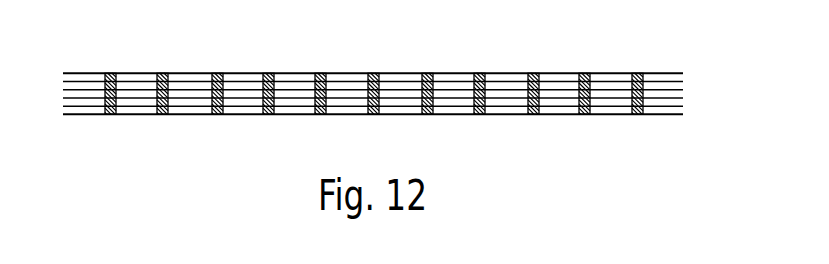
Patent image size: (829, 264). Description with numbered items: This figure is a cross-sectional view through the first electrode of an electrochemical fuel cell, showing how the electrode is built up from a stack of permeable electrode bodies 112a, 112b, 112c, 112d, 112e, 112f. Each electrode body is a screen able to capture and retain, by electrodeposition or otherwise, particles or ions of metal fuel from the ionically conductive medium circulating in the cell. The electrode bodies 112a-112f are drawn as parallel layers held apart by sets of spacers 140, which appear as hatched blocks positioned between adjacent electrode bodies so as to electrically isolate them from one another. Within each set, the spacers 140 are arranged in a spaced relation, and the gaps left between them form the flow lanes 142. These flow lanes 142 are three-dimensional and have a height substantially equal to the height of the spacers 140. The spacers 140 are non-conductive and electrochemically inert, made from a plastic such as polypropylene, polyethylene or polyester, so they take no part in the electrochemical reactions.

The permeable electrode body 112a is at (683, 117).
The permeable electrode body 112b is at (683, 108).
The permeable electrode body 112c is at (683, 99).
The permeable electrode body 112d is at (683, 90).
The permeable electrode body 112e is at (683, 80).
The permeable electrode body 112f is at (682, 73).
The spacer 140 is at (110, 72).
The flow lane 142 is at (292, 109).